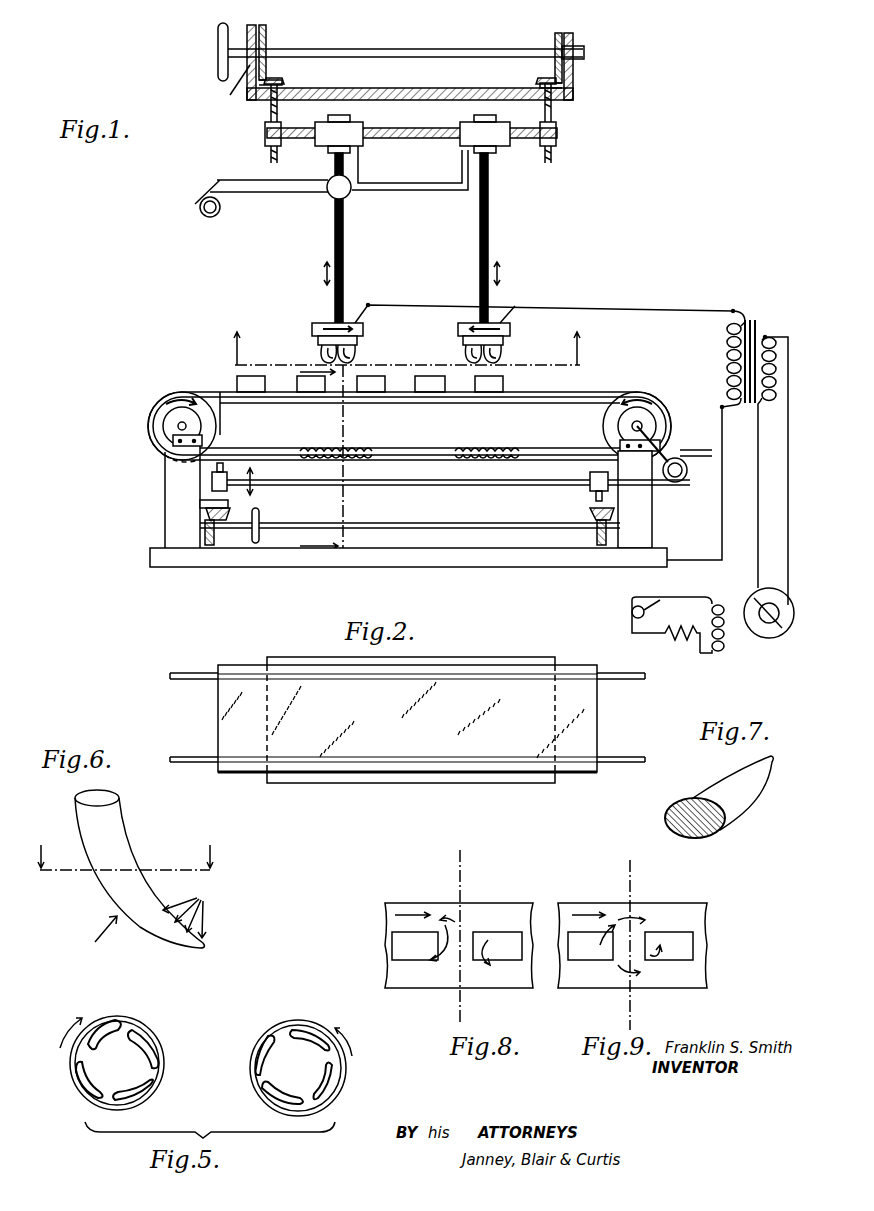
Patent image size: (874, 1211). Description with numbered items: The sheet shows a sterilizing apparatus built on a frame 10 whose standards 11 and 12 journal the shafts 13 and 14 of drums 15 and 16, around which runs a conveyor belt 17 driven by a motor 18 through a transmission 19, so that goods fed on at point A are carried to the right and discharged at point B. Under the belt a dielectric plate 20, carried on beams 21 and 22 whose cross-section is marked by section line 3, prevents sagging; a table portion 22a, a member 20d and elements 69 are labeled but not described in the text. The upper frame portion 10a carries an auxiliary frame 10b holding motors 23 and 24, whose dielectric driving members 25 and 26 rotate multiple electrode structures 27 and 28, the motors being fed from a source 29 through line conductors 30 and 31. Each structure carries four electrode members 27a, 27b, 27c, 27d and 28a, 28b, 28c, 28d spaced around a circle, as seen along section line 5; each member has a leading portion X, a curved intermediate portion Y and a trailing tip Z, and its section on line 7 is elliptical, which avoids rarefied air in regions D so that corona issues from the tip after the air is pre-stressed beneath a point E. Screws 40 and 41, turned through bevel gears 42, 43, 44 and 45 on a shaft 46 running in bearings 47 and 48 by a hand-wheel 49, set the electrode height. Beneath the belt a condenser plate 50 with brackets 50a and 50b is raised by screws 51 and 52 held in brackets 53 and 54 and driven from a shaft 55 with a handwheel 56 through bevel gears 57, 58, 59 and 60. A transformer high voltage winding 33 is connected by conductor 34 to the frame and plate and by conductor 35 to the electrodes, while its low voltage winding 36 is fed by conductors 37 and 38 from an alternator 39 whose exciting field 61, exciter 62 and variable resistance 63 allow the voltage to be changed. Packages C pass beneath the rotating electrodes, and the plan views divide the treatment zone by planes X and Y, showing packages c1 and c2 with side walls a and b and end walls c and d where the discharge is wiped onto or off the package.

In FIG. 1, the frame 10 is at (515, 567).
In FIG. 1, the upper portion of the frame 10a is at (430, 102).
In FIG. 1, the auxiliary frame member 10b is at (405, 138).
In FIG. 1, the standards 11 is at (173, 438).
In FIG. 1, the standards 12 is at (652, 508).
In FIG. 1, the shaft 13 is at (163, 420).
In FIG. 1, the shaft 14 is at (655, 425).
In FIG. 1, the drum 15 is at (160, 405).
In FIG. 1, the drum 16 is at (660, 408).
In FIG. 1, the conveyor belt 17 is at (620, 395).
In FIG. 8, the conveyor belt 17 is at (440, 900).
In FIG. 9, the conveyor belt 17 is at (707, 985).
In FIG. 1, the motor 18 is at (687, 470).
In FIG. 1, the transmission 19 is at (668, 450).
In FIG. 1, the plate-like member 20 is at (560, 392).
In FIG. 2, the plate-like member 20 is at (232, 683).
In FIG. 5, the blade 20d is at (262, 1046).
In FIG. 2, the beam 21 is at (295, 680).
In FIG. 1, the beam 22 is at (260, 403).
In FIG. 2, the beam 22 is at (292, 775).
In FIG. 1, the table portion 22a is at (547, 431).
In FIG. 1, the electric motor 23 is at (325, 140).
In FIG. 1, the electric motor 24 is at (505, 142).
In FIG. 1, the driving member 25 is at (343, 237).
In FIG. 1, the driving member 26 is at (480, 256).
In FIG. 1, the multiple electrode structure 27 is at (363, 333).
In FIG. 5, the multiple electrode structure 27 is at (150, 1025).
In FIG. 1, the electrode member 27a is at (333, 363).
In FIG. 5, the electrode member 27a is at (108, 1028).
In FIG. 1, the electrode member 27b is at (322, 352).
In FIG. 5, the electrode member 27b is at (78, 1068).
In FIG. 5, the electrode member 27c is at (135, 1105).
In FIG. 1, the electrode member 27d is at (352, 363).
In FIG. 5, the electrode member 27d is at (155, 1062).
In FIG. 1, the multiple electrode structure 28 is at (510, 333).
In FIG. 5, the multiple electrode structure 28 is at (282, 1023).
In FIG. 1, the electrode member 28a is at (501, 355).
In FIG. 6, the electrode member 28a is at (123, 858).
In FIG. 5, the electrode member 28a is at (308, 1035).
In FIG. 5, the electrode member 28b is at (330, 1088).
In FIG. 5, the electrode member 28c is at (278, 1098).
In FIG. 1, the electrode member 28d is at (466, 352).
In FIG. 1, the source of energy 29 is at (207, 217).
In FIG. 1, the line conductor 30 is at (232, 175).
In FIG. 1, the line conductor 31 is at (262, 193).
In FIG. 1, the high voltage winding 33 is at (727, 350).
In FIG. 1, the conductor 34 is at (722, 540).
In FIG. 1, the conductor 35 is at (420, 306).
In FIG. 1, the low voltage winding 36 is at (770, 330).
In FIG. 1, the conductor 37 is at (758, 480).
In FIG. 1, the conductor 38 is at (788, 455).
In FIG. 1, the alternator 39 is at (764, 630).
In FIG. 1, the rotatable screw 40 is at (265, 112).
In FIG. 1, the rotatable screw 41 is at (556, 112).
In FIG. 1, the bevel gear 42 is at (284, 80).
In FIG. 1, the bevel gear 43 is at (538, 80).
In FIG. 1, the bevel gear 44 is at (267, 33).
In FIG. 1, the bevel gear 45 is at (554, 40).
In FIG. 1, the shaft 46 is at (400, 53).
In FIG. 1, the bearing 47 is at (232, 95).
In FIG. 1, the bearing 48 is at (584, 52).
In FIG. 1, the hand-wheel 49 is at (218, 68).
In FIG. 1, the condenser plate 50 is at (370, 485).
In FIG. 2, the condenser plate 50 is at (372, 777).
In FIG. 1, the bracket 50a is at (212, 483).
In FIG. 1, the bracket 50b is at (590, 474).
In FIG. 1, the screw 51 is at (217, 466).
In FIG. 1, the screw 52 is at (618, 492).
In FIG. 1, the bracket 53 is at (200, 504).
In FIG. 1, the bracket 54 is at (596, 498).
In FIG. 1, the shaft 55 is at (420, 523).
In FIG. 1, the handwheel 56 is at (259, 538).
In FIG. 1, the bevel gear 57 is at (210, 545).
In FIG. 1, the bevel gear 58 is at (590, 514).
In FIG. 1, the bevel gear 59 is at (225, 515).
In FIG. 1, the bevel gear 60 is at (606, 528).
In FIG. 1, the exciting field 61 is at (705, 597).
In FIG. 1, the exciter 62 is at (633, 618).
In FIG. 1, the variable resistance 63 is at (680, 626).
In FIG. 1, the brushes 69 is at (312, 458).
In FIG. 1, the section line 3— 3 is at (314, 460).
In FIG. 1, the section line 5— 5 is at (407, 338).
In FIG. 6, the section line 7— 7 is at (125, 848).
In FIG. 1, the receiving point A is at (165, 395).
In FIG. 1, the discharge point B is at (655, 392).
In FIG. 1, the packages C is at (237, 376).
In FIG. 6, the regions D is at (187, 908).
In FIG. 6, the point E is at (101, 936).
In FIG. 6, the downwardly extending portion X is at (110, 815).
In FIG. 8, the downwardly extending portion X is at (468, 939).
In FIG. 6, the intermediate portion Y is at (105, 885).
In FIG. 7, the intermediate portion Y is at (733, 823).
In FIG. 9, the intermediate portion Y is at (638, 944).
In FIG. 6, the tip Z is at (203, 946).
In FIG. 7, the tip Z is at (768, 778).
In FIG. 8, the side wall a is at (405, 940).
In FIG. 9, the side wall a is at (580, 938).
In FIG. 8, the side wall b is at (415, 960).
In FIG. 9, the side wall b is at (590, 960).
In FIG. 8, the leading end wall c is at (458, 975).
In FIG. 9, the leading end wall c is at (693, 950).
In FIG. 8, the package c1 is at (512, 940).
In FIG. 9, the package c1 is at (695, 945).
In FIG. 9, the package c2 is at (575, 935).
In FIG. 8, the rear end wall d is at (475, 930).
In FIG. 9, the rear end wall d is at (660, 945).